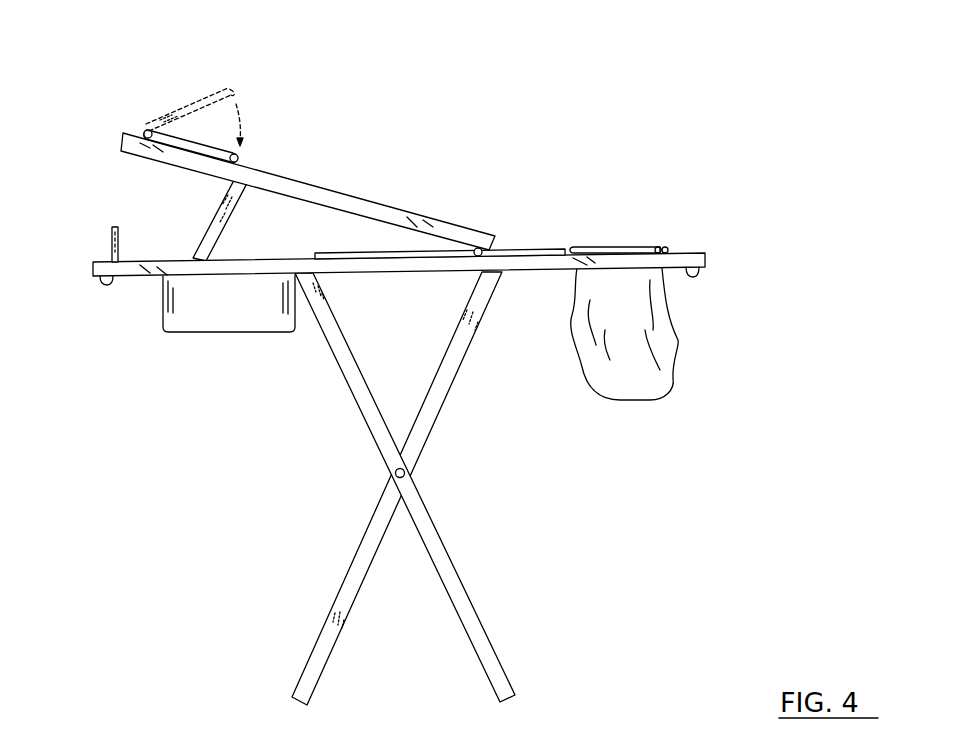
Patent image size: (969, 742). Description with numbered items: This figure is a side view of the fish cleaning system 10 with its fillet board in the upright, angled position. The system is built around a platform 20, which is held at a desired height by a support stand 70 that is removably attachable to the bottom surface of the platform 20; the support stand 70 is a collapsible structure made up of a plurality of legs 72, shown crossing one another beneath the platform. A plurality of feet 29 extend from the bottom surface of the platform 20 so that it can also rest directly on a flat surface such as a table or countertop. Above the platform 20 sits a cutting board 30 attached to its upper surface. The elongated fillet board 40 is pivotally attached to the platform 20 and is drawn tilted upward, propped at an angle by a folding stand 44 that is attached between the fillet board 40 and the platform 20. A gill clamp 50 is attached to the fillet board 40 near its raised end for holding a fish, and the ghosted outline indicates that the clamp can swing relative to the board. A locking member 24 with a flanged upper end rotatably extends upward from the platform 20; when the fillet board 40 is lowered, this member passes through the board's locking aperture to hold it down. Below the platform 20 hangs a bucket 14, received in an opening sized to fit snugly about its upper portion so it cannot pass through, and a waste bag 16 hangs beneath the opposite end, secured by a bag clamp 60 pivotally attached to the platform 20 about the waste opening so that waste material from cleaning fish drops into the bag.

The fish cleaning system 10 is at (775, 92).
The bucket 14 is at (215, 318).
The waste bag 16 is at (655, 388).
The platform 20 is at (690, 253).
The locking member 24 is at (113, 228).
The feet 29 is at (103, 282).
The cutting board 30 is at (522, 247).
The fillet board 40 is at (355, 200).
The folding stand 44 is at (227, 213).
The gill clamp 50 is at (148, 130).
The bag clamp 60 is at (643, 246).
The support stand 70 is at (445, 526).
The legs 72 is at (465, 603).